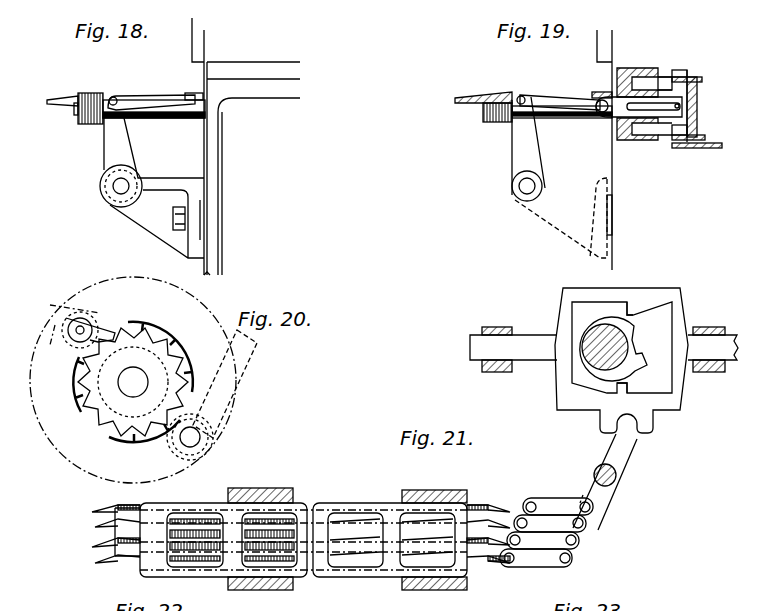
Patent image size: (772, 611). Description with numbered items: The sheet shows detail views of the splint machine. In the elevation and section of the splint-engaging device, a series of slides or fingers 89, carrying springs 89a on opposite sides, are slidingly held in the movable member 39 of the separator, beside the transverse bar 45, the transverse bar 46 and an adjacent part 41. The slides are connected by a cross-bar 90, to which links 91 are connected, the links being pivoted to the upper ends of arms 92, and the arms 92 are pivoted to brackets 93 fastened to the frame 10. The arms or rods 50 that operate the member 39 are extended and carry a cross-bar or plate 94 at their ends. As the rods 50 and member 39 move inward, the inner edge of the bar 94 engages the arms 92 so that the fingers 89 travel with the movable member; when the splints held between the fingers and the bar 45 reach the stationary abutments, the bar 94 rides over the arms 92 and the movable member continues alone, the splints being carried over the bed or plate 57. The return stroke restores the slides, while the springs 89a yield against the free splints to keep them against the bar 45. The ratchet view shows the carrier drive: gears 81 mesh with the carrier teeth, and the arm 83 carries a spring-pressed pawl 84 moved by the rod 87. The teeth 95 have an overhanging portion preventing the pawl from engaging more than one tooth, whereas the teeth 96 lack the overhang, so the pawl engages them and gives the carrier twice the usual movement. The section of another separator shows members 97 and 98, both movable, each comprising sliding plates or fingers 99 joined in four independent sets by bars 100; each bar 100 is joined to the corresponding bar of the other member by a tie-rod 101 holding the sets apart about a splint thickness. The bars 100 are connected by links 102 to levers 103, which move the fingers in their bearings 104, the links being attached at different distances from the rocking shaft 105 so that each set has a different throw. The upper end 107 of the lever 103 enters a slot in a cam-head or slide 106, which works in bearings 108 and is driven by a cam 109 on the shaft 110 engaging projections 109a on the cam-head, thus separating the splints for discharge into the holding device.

In FIG. 18, the frame 10 is at (246, 146).
In FIG. 19, the frame 10 is at (616, 150).
In FIG. 19, the movable member of the separator 39 is at (643, 63).
In FIG. 19, the plate 41 is at (684, 70).
In FIG. 19, the transverse bar 45 is at (700, 80).
In FIG. 19, the transverse bar 46 is at (670, 82).
In FIG. 18, the arms or rods 50 is at (165, 119).
In FIG. 19, the arms or rods 50 is at (563, 119).
In FIG. 19, the bed or plate 57 is at (709, 148).
In FIG. 20, the gears 81 is at (232, 405).
In FIG. 20, the arm 83 is at (70, 343).
In FIG. 20, the spring-pressed pawl 84 is at (119, 325).
In FIG. 20, the rod 87 is at (248, 360).
In FIG. 19, the slides or fingers 89 is at (607, 120).
In FIG. 19, the springs 89a is at (664, 110).
In FIG. 18, the cross-bar 90 is at (193, 93).
In FIG. 19, the cross-bar 90 is at (593, 93).
In FIG. 18, the links 91 is at (140, 96).
In FIG. 19, the links 91 is at (545, 96).
In FIG. 18, the arms 92 is at (111, 152).
In FIG. 19, the arms 92 is at (512, 147).
In FIG. 18, the brackets 93 is at (155, 226).
In FIG. 19, the brackets 93 is at (566, 226).
In FIG. 18, the cross-bar or plate 94 is at (62, 97).
In FIG. 19, the cross-bar or plate 94 is at (477, 97).
In FIG. 20, the teeth of the ratchet-wheel 95 is at (93, 398).
In FIG. 20, the teeth 96 is at (163, 341).
In FIG. 21, the separator member 97 is at (340, 504).
In FIG. 21, the separator member 98 is at (291, 532).
In FIG. 21, the sliding plates or fingers 99 is at (207, 577).
In FIG. 21, the bars 100 is at (110, 507).
In FIG. 21, the tie bar or rod 101 is at (180, 553).
In FIG. 21, the links 102 is at (566, 499).
In FIG. 21, the levers 103 is at (604, 516).
In FIG. 21, the bearings 104 is at (287, 591).
In FIG. 21, the pivot or rocking shaft 105 is at (617, 477).
In FIG. 21, the cam-head or slide 106 is at (680, 399).
In FIG. 21, the upper end of the lever 107 is at (641, 440).
In FIG. 21, the bearings 108 is at (484, 369).
In FIG. 21, the cam 109 is at (638, 341).
In FIG. 21, the projections 109a is at (630, 300).
In FIG. 21, the shaft 110 is at (592, 355).